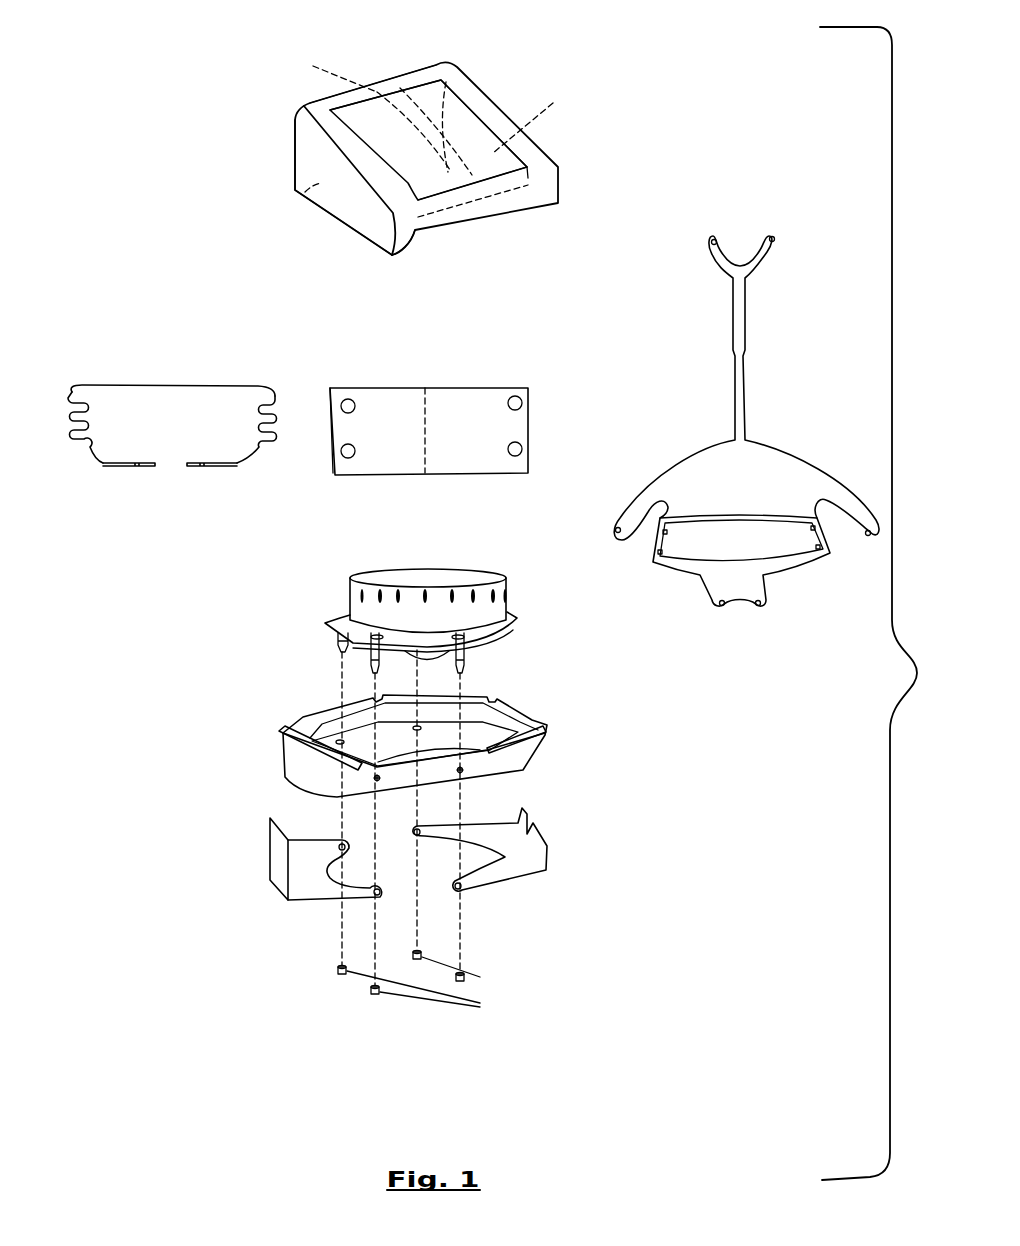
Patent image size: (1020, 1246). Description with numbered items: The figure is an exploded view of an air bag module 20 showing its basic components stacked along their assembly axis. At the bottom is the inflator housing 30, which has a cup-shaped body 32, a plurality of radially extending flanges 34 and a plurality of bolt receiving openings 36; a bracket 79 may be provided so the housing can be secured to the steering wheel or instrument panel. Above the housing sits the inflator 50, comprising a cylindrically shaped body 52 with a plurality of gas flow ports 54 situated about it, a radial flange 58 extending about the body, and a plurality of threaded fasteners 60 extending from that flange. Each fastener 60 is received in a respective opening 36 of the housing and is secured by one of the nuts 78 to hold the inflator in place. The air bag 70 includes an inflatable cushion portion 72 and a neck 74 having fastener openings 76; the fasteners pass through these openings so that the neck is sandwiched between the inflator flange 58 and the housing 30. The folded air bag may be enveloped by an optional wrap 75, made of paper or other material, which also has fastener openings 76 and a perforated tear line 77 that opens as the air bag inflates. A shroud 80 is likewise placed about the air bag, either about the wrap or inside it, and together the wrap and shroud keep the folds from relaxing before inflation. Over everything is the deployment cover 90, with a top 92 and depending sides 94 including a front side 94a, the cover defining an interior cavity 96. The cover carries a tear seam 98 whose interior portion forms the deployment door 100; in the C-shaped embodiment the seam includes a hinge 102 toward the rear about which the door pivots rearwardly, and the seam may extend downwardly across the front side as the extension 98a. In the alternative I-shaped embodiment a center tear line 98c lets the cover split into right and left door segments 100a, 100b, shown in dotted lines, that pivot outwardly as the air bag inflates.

The air bag module 20 is at (170, 677).
The inflator housing 30 is at (428, 748).
The cup-shaped body 32 is at (497, 723).
The radially extending flanges 34 is at (297, 747).
The bolt receiving openings 36 is at (378, 780).
The inflator 50 is at (422, 744).
The cylindrically shaped body 52 is at (512, 607).
The gas flow ports 54 is at (510, 590).
The radial flange 58 is at (510, 642).
The threaded fasteners 60 is at (340, 648).
The air bag 70 is at (289, 409).
The cushion portion 72 is at (175, 400).
The neck 74 is at (93, 448).
The fastener openings 76 is at (137, 467).
The wrap 75 is at (429, 399).
The perforated tear line 77 is at (428, 410).
The nuts 78 is at (465, 978).
The bracket 79 is at (548, 857).
The shroud 80 is at (645, 471).
The deployment cover 90 is at (563, 167).
The top 92 is at (496, 115).
The depending sides 94 is at (343, 207).
The front side 94a is at (403, 243).
The interior cavity 96 is at (305, 192).
The tear seam 98 is at (395, 164).
The downward extension of the tear seam 98a is at (483, 223).
The center tear line 98c is at (445, 64).
The deployment door 100 is at (469, 133).
The left-hand door segment 100a is at (315, 70).
The right-hand door segment 100b is at (552, 120).
The hinge 102 is at (405, 88).